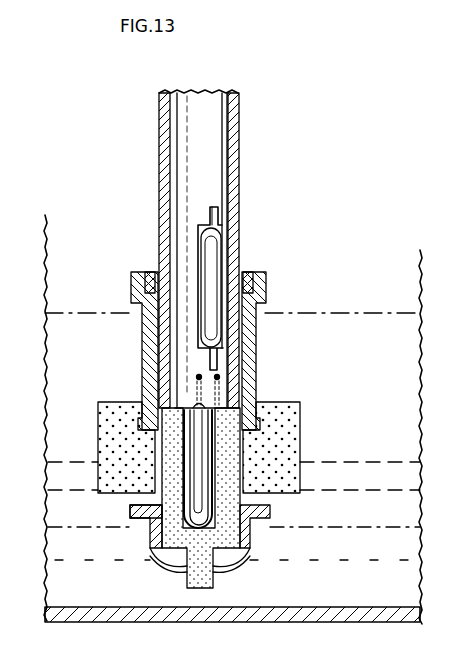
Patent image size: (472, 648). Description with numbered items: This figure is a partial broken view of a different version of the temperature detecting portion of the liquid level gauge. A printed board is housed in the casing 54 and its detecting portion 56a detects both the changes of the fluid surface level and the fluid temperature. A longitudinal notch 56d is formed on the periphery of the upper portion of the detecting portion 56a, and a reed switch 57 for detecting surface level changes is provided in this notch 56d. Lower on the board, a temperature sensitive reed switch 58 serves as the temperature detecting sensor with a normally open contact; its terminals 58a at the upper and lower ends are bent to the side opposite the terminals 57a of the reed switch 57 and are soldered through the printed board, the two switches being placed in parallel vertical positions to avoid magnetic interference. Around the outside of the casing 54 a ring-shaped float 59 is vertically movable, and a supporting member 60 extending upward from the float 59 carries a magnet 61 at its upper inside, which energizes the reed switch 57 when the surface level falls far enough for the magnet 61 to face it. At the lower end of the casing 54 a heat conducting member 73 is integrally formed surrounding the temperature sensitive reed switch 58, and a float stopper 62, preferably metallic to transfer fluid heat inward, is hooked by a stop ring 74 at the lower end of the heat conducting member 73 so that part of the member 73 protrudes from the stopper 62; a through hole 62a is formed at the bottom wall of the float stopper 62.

The casing 54 is at (237, 123).
The detecting portion 56a is at (180, 112).
The longitudinal notch 56d is at (197, 245).
The reed switch 57 is at (218, 238).
The terminals of reed switch 57a is at (215, 208).
The magnet 61 is at (205, 272).
The supporting member 60 is at (257, 325).
The float 59 is at (300, 418).
The terminals of temperature sensitive reed switch 58a is at (222, 386).
The temperature sensitive reed switch 58 is at (205, 463).
The through hole 62a is at (215, 580).
The float stopper 62 is at (148, 537).
The heat conducting member 73 is at (130, 507).
The stop ring 74 is at (170, 570).